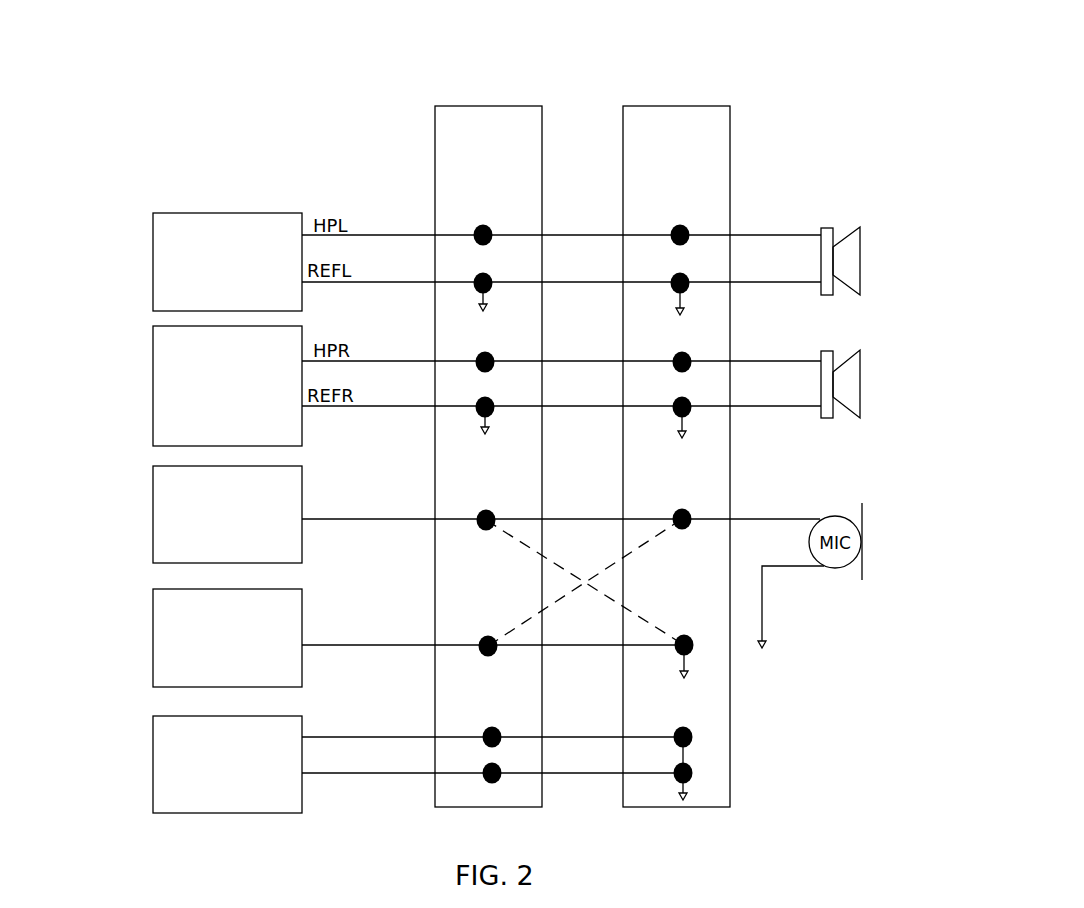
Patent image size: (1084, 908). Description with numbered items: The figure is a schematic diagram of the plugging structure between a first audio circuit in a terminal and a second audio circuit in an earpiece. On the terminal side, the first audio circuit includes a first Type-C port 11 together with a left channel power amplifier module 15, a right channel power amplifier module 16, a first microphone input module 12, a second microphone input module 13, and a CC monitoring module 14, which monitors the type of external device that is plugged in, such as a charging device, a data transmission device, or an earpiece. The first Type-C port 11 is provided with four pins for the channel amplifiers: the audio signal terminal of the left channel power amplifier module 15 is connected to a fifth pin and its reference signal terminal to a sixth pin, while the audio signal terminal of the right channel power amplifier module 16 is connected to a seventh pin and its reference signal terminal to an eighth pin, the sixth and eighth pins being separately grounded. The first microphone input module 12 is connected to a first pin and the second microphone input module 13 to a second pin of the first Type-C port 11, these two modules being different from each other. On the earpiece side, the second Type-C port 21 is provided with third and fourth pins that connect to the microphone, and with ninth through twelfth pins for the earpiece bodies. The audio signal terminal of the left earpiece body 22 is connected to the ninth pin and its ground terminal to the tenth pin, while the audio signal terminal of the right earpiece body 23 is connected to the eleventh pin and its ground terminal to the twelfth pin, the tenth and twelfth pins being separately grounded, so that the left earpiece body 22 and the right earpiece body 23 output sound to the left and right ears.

The first Type-C port 11 is at (493, 106).
The second Type-C port 21 is at (672, 106).
The first microphone input module 12 is at (153, 516).
The second microphone input module 13 is at (153, 643).
The CC monitoring module 14 is at (153, 762).
The left channel power amplifier module 15 is at (153, 262).
The right channel power amplifier module 16 is at (153, 388).
The left earpiece body 22 is at (861, 250).
The right earpiece body 23 is at (861, 375).